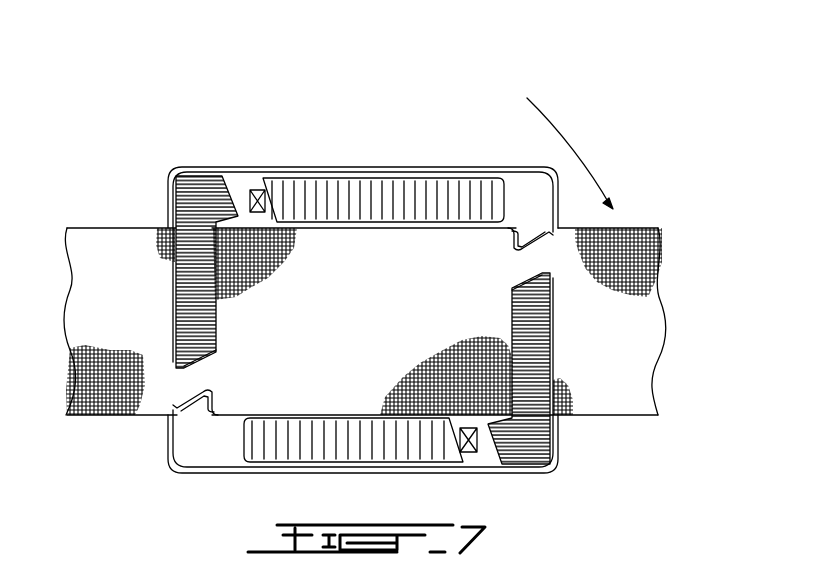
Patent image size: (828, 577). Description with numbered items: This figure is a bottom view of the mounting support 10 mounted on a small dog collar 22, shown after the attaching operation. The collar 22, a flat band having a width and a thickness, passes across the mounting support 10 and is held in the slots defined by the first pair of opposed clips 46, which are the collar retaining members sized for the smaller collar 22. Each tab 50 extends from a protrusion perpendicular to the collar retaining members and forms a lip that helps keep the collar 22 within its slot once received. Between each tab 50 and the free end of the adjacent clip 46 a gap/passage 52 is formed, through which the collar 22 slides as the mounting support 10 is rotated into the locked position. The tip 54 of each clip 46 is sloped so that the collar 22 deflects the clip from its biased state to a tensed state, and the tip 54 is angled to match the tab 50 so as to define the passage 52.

The mounting support 10 is at (180, 130).
The dog collar 22 is at (595, 400).
The first pair of opposed clips 46 is at (195, 282).
The tab 50 is at (524, 224).
The gap/passage 52 is at (548, 254).
The tip 54 is at (180, 360).